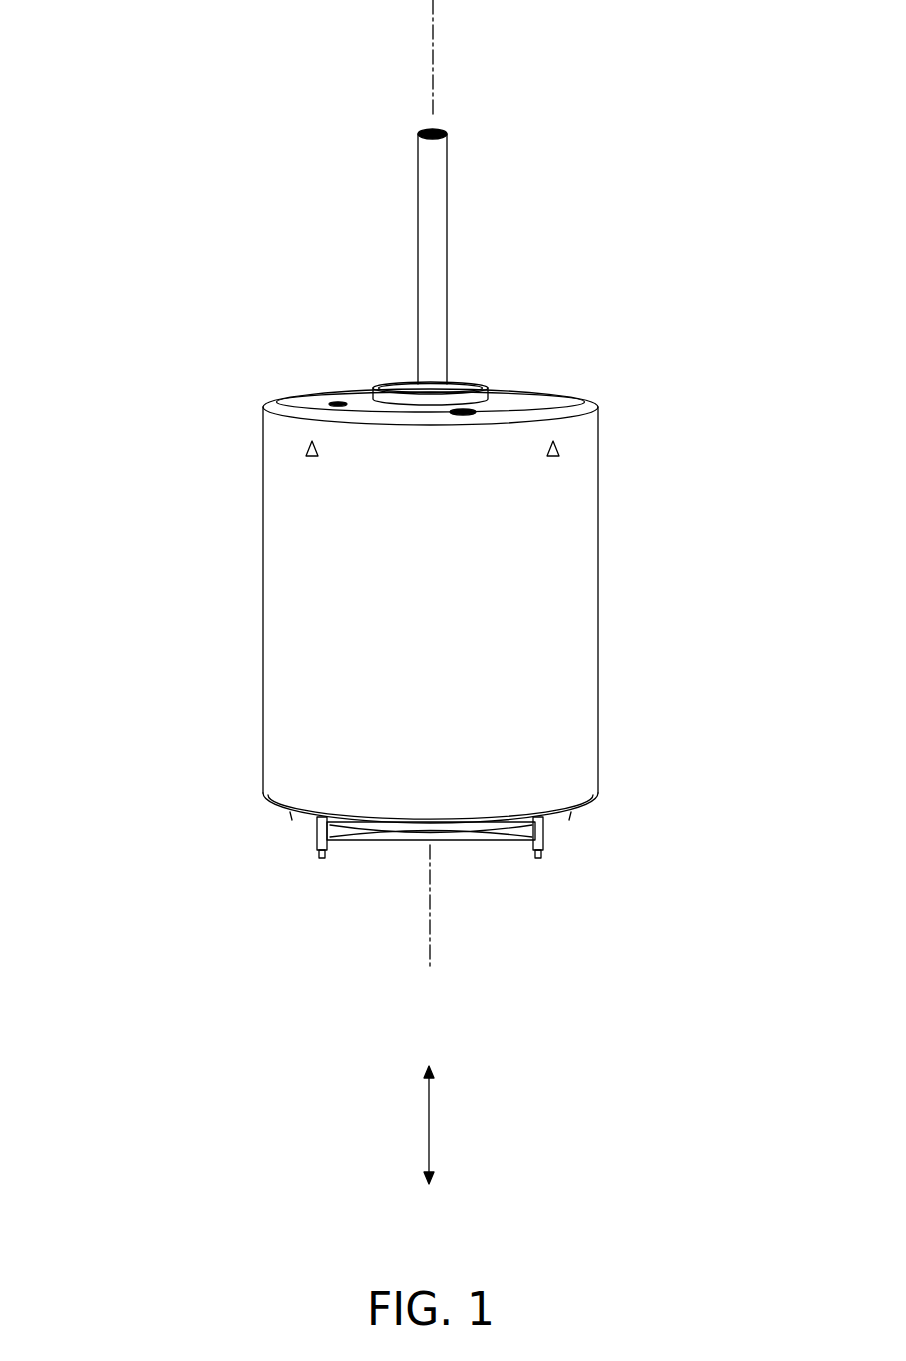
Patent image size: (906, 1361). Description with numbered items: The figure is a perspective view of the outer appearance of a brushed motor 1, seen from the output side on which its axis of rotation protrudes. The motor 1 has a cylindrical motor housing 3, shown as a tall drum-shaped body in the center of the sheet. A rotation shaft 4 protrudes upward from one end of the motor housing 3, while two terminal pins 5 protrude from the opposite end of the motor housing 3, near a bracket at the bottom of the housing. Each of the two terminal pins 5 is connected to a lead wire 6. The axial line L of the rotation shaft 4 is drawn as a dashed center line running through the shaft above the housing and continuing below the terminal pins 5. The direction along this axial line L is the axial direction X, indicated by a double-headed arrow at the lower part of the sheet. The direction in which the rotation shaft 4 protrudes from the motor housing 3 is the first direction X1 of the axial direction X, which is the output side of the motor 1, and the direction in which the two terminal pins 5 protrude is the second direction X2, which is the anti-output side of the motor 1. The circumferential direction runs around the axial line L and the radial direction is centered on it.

The motor 1 is at (412, 485).
The motor housing 3 is at (580, 493).
The rotation shaft 4 is at (440, 208).
The terminal pins 5 is at (322, 858).
The lead wire 6 is at (360, 850).
The axial line L is at (433, 42).
The axial direction X is at (429, 1112).
The first direction X1 is at (428, 1047).
The second direction X2 is at (428, 1201).